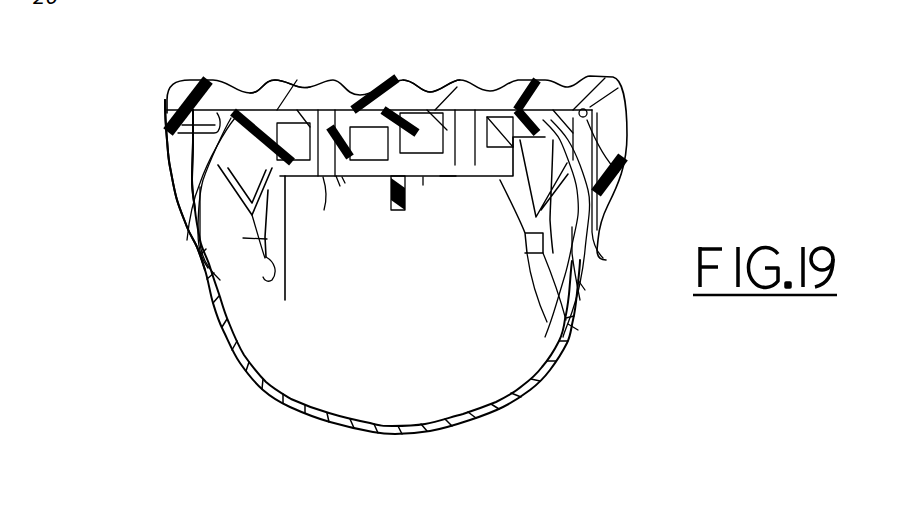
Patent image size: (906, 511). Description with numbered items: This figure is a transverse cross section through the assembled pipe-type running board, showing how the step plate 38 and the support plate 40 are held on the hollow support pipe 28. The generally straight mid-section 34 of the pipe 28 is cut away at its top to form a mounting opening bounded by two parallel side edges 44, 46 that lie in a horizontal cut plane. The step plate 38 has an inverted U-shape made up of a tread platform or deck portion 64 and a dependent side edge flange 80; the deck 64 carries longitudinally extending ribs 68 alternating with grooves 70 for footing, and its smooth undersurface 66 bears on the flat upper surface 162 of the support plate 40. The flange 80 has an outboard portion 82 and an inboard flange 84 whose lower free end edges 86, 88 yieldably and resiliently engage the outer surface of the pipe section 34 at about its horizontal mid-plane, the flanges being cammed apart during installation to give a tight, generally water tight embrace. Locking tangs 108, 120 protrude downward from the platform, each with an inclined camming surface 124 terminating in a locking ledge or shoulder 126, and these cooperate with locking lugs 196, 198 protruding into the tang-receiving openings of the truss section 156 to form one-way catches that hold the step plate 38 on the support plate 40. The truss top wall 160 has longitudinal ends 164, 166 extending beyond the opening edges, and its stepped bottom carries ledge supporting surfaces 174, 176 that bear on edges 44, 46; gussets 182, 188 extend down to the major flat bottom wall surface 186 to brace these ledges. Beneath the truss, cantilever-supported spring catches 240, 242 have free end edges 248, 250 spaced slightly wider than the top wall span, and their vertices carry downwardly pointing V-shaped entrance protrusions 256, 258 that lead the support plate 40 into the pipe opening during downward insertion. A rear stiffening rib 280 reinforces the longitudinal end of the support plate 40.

The hollow support pipe 28 is at (272, 403).
The mid-section portion 34 is at (220, 320).
The step plate 38 is at (636, 97).
The support plate 40 is at (448, 186).
The side edge 44 is at (245, 207).
The side edge 46 is at (534, 196).
The tread platform or deck portion 64 is at (225, 80).
The undersurface 66 is at (585, 112).
The ribs 68 is at (278, 80).
The grooves 70 is at (405, 83).
The side edge flange 80 is at (158, 160).
The outboard flange portion 82 is at (183, 196).
The inboard flange 84 is at (617, 138).
The lower free end edge 86 is at (207, 212).
The lower free end edge 88 is at (604, 259).
The locking tang 108 is at (463, 128).
The locking tang 120 is at (324, 177).
The inclined camming surface 124 is at (342, 177).
The locking ledge or shoulder 126 is at (336, 176).
The truss section 156 is at (543, 102).
The top wall 160 is at (257, 112).
The upper surface 162 is at (366, 100).
The longitudinal end 164 is at (613, 120).
The longitudinal end 166 is at (178, 117).
The ledge supporting surface 174 is at (188, 120).
The ledge supporting surface 176 is at (620, 173).
The reinforcing gusset 182 is at (284, 178).
The major flat bottom wall surface 186 is at (423, 177).
The gusset 188 is at (521, 222).
The locking lug 196 is at (318, 110).
The locking lug 198 is at (470, 110).
The spring catch 240 is at (573, 327).
The spring catch 242 is at (247, 237).
The free end edge 248 is at (580, 283).
The free end edge 250 is at (200, 208).
The V-shaped entrance protrusion 256 is at (545, 255).
The V-shaped entrance protrusion 258 is at (271, 270).
The rear stiffening rib 280 is at (390, 194).